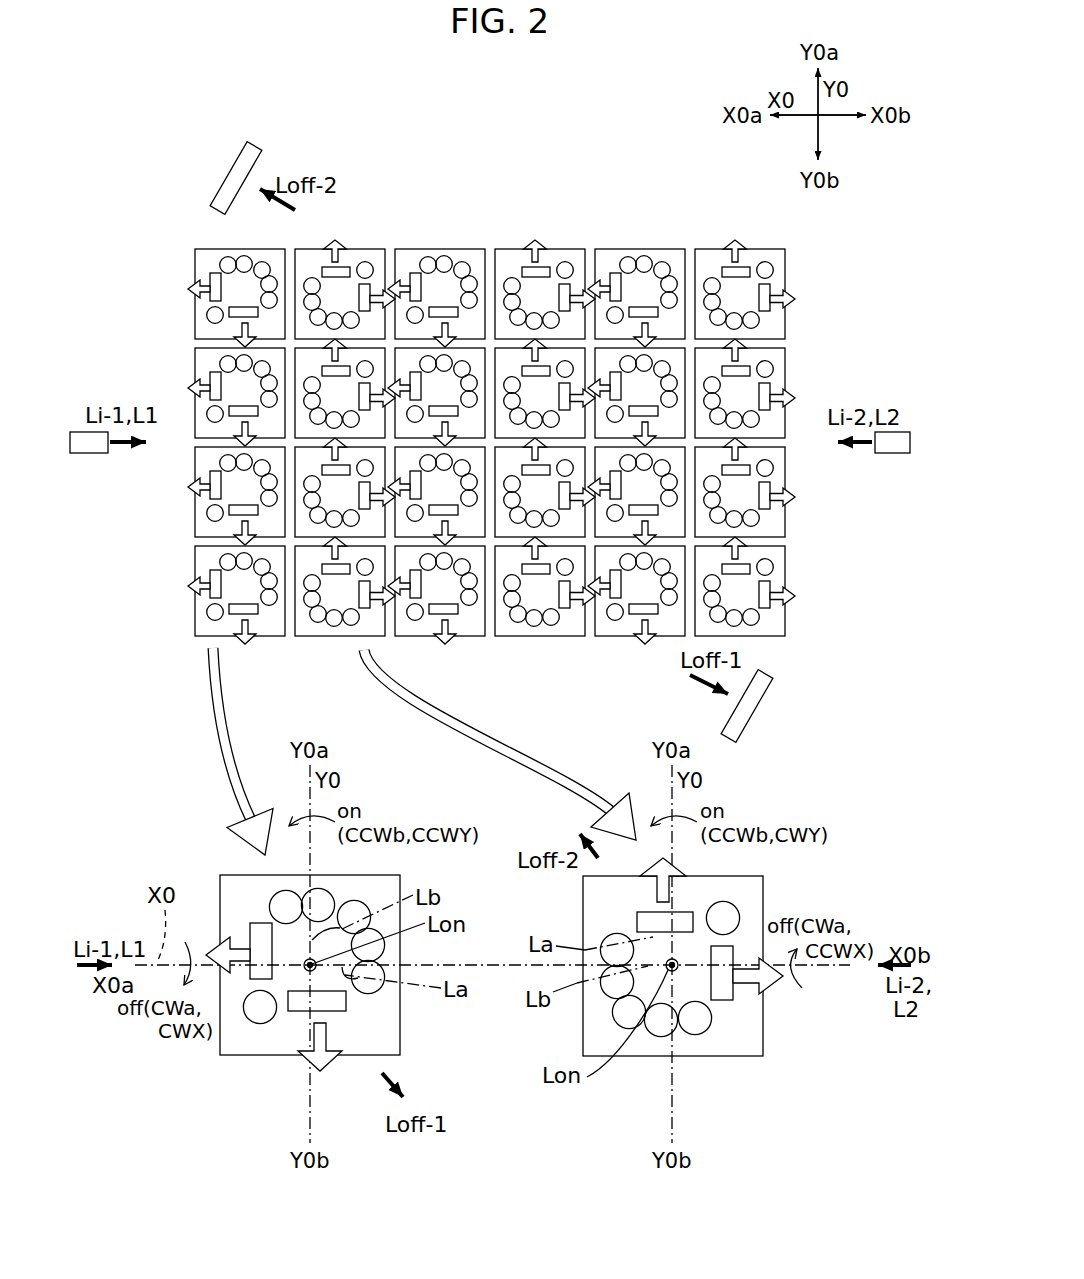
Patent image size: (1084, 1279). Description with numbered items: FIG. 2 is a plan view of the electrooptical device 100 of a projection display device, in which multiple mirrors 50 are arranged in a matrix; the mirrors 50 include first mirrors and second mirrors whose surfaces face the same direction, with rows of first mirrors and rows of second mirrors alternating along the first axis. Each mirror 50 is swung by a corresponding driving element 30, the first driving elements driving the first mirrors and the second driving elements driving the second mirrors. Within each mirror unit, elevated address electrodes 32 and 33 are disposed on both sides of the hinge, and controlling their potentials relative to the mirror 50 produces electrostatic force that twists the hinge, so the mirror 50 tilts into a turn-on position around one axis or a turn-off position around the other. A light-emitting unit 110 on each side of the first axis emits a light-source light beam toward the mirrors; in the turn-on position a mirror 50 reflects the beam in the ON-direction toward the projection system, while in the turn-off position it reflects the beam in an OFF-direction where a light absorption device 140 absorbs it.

The electrooptical device 100 is at (468, 625).
The mirror 50 is at (195, 249).
The driving element 30 is at (213, 315).
The elevated address electrode 32 is at (344, 1012).
The elevated address electrode 33 is at (258, 927).
The light-emitting unit 110 is at (77, 453).
The light absorption device 140 is at (262, 150).